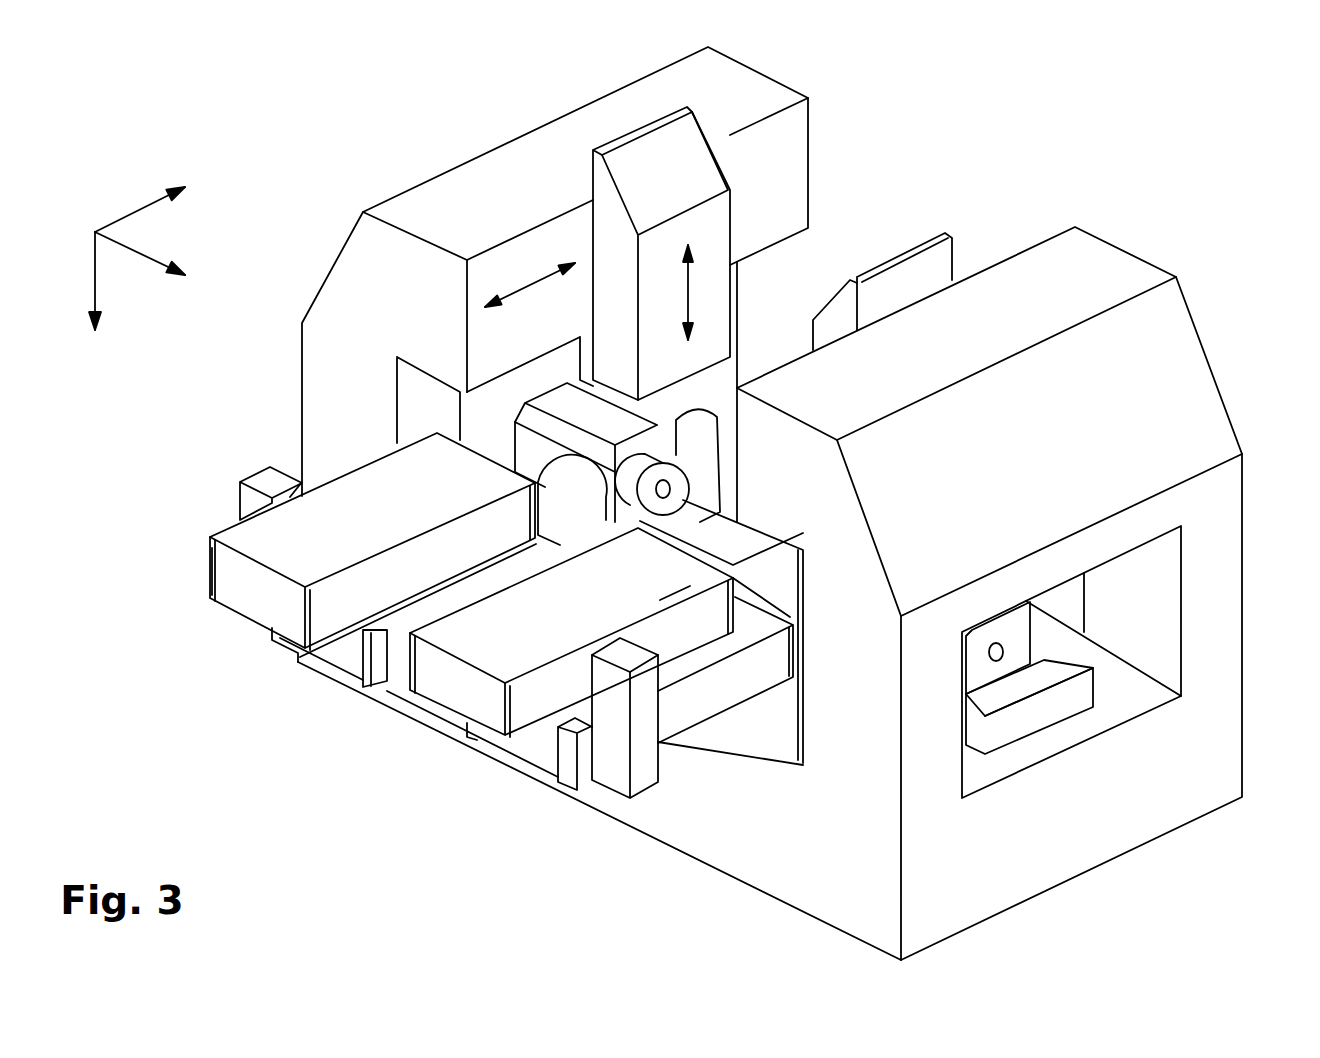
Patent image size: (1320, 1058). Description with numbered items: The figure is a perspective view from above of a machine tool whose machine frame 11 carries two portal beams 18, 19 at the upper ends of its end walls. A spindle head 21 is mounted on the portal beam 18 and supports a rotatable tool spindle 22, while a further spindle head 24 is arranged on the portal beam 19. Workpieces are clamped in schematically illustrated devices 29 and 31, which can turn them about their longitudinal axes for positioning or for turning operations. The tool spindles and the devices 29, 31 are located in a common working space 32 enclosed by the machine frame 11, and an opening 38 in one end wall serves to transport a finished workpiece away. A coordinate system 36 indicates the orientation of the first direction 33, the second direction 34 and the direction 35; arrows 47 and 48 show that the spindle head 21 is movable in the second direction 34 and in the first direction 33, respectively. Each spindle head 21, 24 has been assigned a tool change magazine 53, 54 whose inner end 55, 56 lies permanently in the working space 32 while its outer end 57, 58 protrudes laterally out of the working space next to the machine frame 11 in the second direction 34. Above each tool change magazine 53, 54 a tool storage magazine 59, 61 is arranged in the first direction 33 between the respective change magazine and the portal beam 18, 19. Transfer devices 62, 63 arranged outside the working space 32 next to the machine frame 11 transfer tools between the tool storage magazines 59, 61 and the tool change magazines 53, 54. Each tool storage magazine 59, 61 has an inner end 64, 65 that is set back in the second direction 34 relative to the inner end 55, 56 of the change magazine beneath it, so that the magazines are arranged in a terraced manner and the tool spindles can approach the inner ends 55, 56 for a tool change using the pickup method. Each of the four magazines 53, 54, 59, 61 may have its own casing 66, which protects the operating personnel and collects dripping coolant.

The machine frame 11 is at (1236, 350).
The portal beam 18 is at (758, 90).
The portal beam 19 is at (1115, 258).
The spindle head 21 is at (720, 233).
The tool spindle 22 is at (680, 381).
The spindle head 24 is at (933, 270).
The device 29 is at (565, 398).
The device 31 is at (1015, 621).
The working space 32 is at (752, 303).
The first direction 33 is at (90, 266).
The second direction 34 is at (130, 212).
The direction 35 is at (135, 255).
The coordinate system 36 is at (118, 140).
The opening 38 is at (1134, 638).
The arrow 47 is at (535, 285).
The arrow 48 is at (686, 293).
The tool change magazine 53 is at (297, 642).
The tool change magazine 54 is at (532, 748).
The inner end 55 is at (558, 520).
The inner end 56 is at (755, 617).
The outer end 57 is at (382, 620).
The outer end 58 is at (578, 717).
The tool storage magazine 59 is at (247, 593).
The tool storage magazine 61 is at (450, 692).
The transfer device 62 is at (270, 482).
The transfer device 63 is at (647, 777).
The inner end 64 is at (430, 447).
The inner end 65 is at (670, 580).
The casing 66 is at (315, 538).